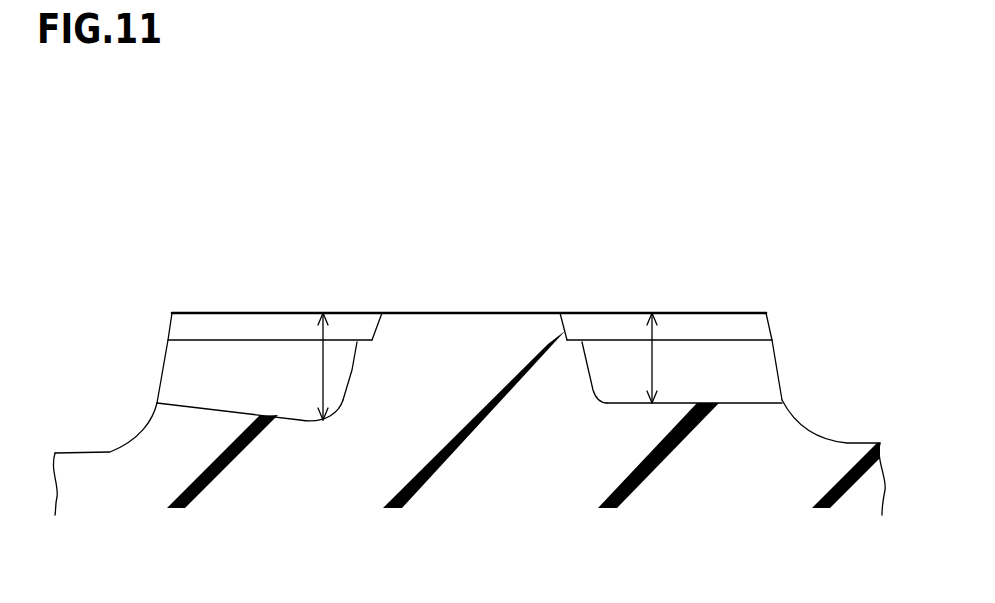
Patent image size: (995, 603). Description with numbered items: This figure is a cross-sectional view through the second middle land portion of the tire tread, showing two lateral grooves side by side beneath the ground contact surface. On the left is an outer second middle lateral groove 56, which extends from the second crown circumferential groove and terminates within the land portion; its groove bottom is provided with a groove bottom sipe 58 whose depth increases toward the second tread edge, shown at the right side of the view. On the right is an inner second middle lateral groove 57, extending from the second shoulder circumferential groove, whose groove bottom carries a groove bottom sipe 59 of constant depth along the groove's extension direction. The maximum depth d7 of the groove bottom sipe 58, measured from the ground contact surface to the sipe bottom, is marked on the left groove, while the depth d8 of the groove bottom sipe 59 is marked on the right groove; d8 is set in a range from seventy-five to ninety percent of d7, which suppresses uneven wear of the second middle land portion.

The outer second middle lateral groove 56 is at (263, 323).
The inner second middle lateral groove 57 is at (692, 323).
The groove bottom sipe 58 is at (222, 398).
The groove bottom sipe 59 is at (733, 400).
The maximum depth of the groove bottom sipe d7 is at (323, 368).
The depth of the groove bottom sipe d8 is at (652, 368).